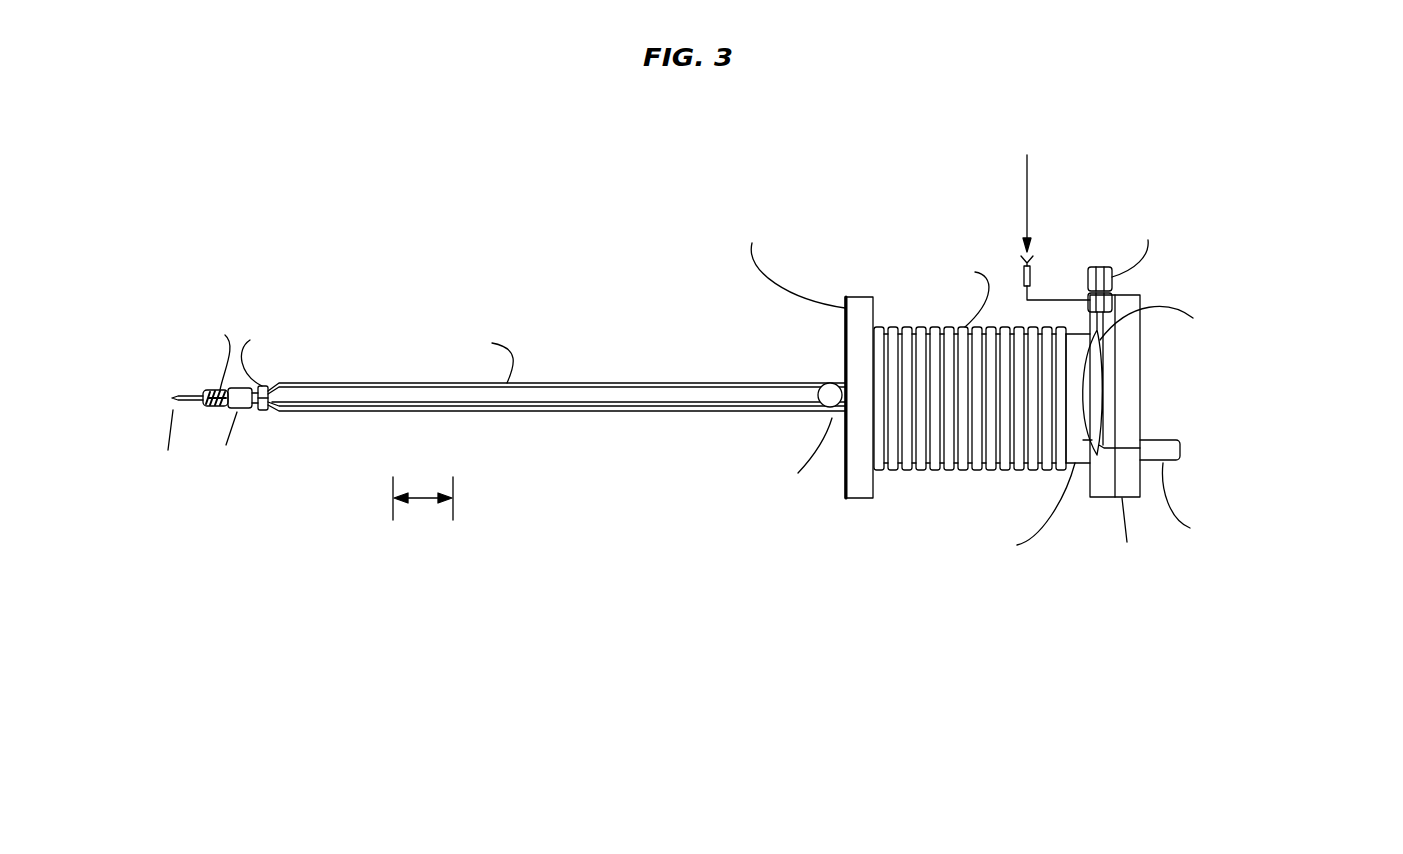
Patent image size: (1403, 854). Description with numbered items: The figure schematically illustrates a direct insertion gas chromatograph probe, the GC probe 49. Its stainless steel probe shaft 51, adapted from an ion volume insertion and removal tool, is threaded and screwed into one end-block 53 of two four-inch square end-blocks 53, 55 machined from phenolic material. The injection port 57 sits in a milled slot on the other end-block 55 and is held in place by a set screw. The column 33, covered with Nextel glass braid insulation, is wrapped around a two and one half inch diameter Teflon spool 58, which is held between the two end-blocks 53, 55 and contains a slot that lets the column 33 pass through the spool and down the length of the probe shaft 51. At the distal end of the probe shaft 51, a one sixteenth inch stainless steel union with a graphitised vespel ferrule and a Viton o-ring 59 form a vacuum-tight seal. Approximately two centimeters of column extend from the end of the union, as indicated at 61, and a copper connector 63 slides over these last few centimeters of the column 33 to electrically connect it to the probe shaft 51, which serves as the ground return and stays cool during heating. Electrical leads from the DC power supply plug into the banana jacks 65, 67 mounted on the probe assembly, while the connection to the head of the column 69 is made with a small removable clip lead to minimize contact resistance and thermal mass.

The GC probe 49 is at (384, 212).
The column end extending from union 61 is at (172, 398).
The copper connector 63 is at (205, 396).
The Viton o-ring 59 is at (263, 412).
The probe shaft 51 is at (610, 384).
The banana jack 65 is at (828, 408).
The end-block 53 is at (845, 360).
The column 33 is at (975, 470).
The end-block 55 is at (1128, 413).
The Teflon spool 58 is at (1080, 447).
The head of the column 69 is at (1100, 345).
The injection port 57 is at (1097, 265).
The banana jack 67 is at (1190, 449).